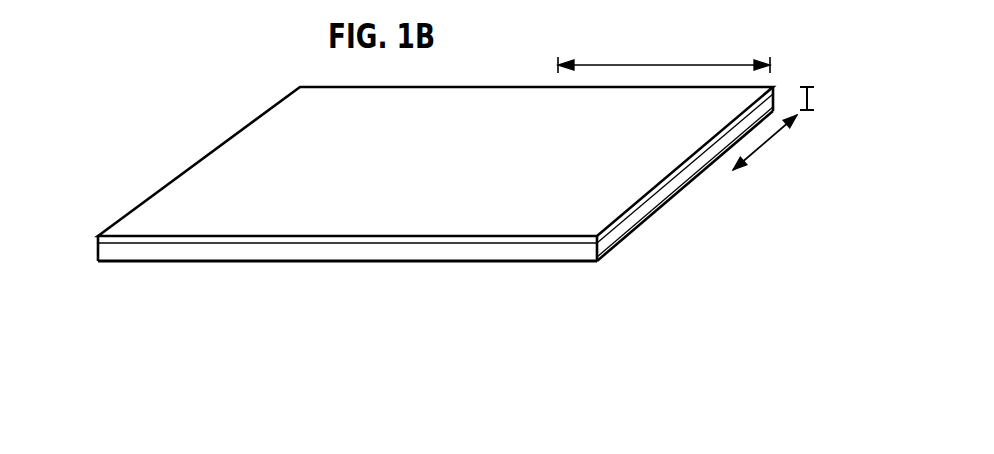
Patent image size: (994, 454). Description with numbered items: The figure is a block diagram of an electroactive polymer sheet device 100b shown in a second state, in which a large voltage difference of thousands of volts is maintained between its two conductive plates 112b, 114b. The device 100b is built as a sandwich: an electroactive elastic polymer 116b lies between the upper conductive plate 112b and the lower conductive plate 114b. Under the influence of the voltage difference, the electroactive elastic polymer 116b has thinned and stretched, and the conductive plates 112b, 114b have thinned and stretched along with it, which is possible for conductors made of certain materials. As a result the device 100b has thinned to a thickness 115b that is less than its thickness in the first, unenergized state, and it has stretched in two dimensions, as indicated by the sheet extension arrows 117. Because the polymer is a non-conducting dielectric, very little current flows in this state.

The electroactive polymer sheet device 100b is at (464, 212).
The conductive plate 112b is at (380, 156).
The conductive plate 114b is at (172, 261).
The thickness 115b is at (698, 217).
The electroactive elastic polymer 116b is at (634, 222).
The sheet extension arrows 117 is at (773, 142).